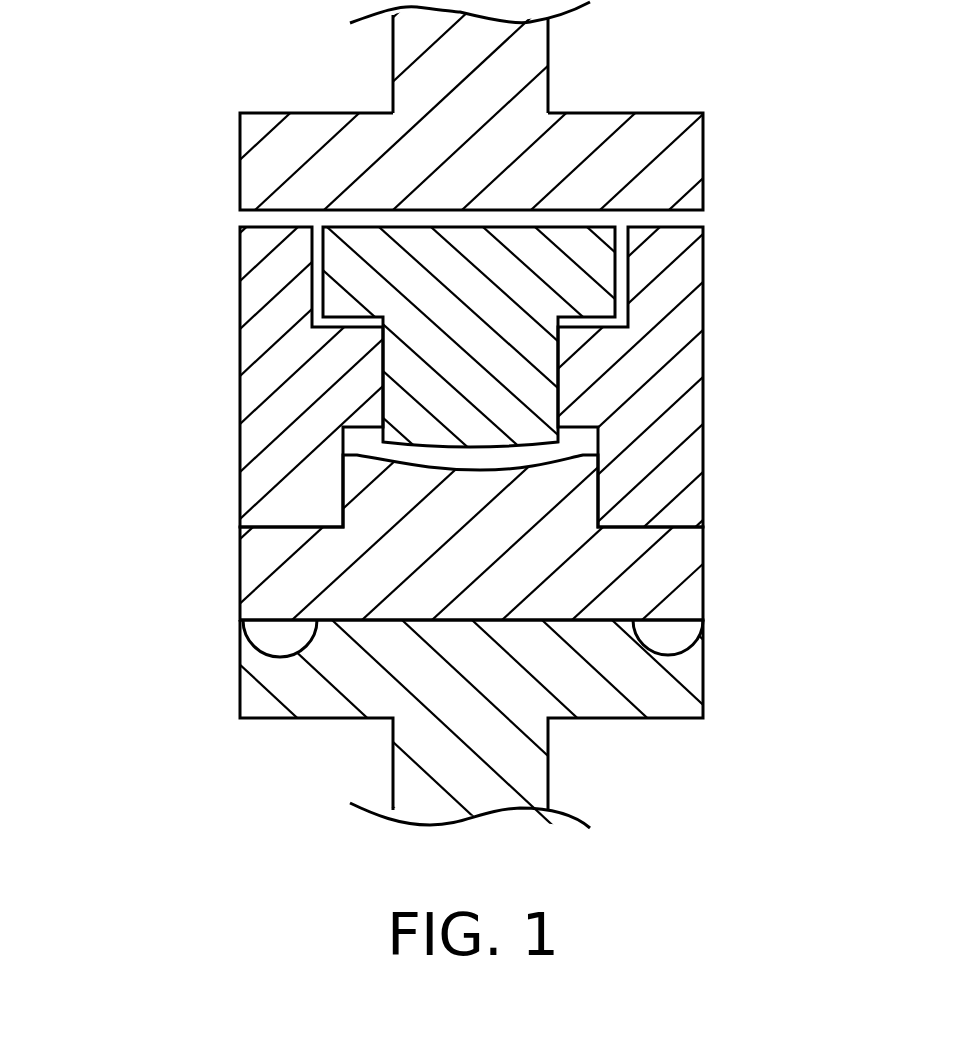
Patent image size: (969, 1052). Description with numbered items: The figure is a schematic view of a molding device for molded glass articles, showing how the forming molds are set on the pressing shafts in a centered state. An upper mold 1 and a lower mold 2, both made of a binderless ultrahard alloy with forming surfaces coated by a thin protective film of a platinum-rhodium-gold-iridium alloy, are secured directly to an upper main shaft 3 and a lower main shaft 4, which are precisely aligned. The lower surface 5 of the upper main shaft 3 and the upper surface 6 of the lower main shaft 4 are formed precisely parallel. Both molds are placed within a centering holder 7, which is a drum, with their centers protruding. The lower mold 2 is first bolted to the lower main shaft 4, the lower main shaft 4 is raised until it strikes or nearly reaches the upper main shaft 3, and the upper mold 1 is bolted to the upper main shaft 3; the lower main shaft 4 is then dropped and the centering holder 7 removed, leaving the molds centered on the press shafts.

The upper mold 1 is at (527, 298).
The lower mold 2 is at (520, 583).
The upper main shaft 3 is at (285, 163).
The lower main shaft 4 is at (360, 672).
The lower surface of main upper shaft 5 is at (263, 212).
The upper surface of main lower shaft 6 is at (300, 650).
The centering holder 7 is at (302, 387).